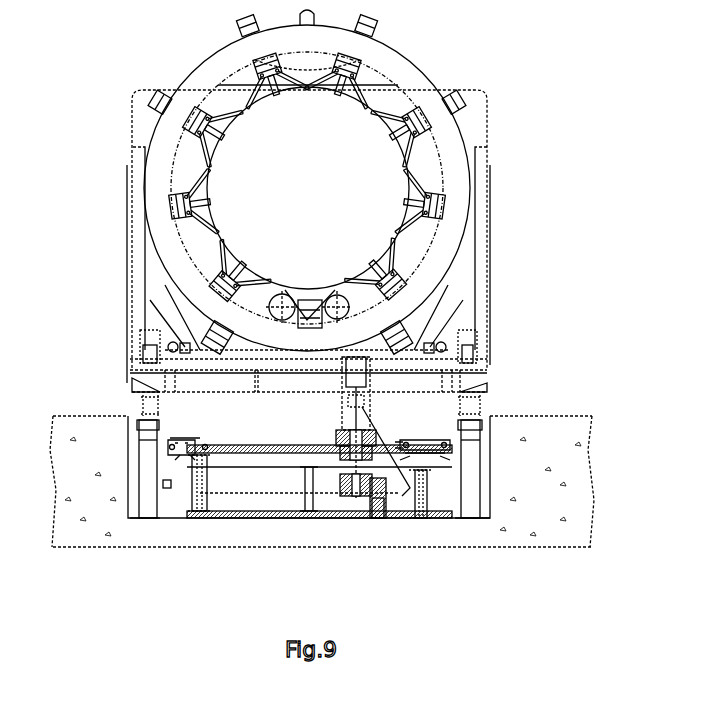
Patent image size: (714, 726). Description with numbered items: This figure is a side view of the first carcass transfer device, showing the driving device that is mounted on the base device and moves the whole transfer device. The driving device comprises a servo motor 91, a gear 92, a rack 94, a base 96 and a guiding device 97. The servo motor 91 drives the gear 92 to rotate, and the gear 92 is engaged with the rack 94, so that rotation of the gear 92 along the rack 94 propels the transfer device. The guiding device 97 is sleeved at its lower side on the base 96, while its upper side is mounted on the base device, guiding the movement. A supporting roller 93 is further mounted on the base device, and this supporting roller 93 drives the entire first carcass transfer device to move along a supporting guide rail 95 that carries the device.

The servo motor 91 is at (422, 505).
The gear 92 is at (349, 484).
The supporting roller 93 is at (474, 407).
The rack 94 is at (371, 488).
The supporting guide rail 95 is at (147, 418).
The base 96 is at (206, 472).
The guiding device 97 is at (191, 468).